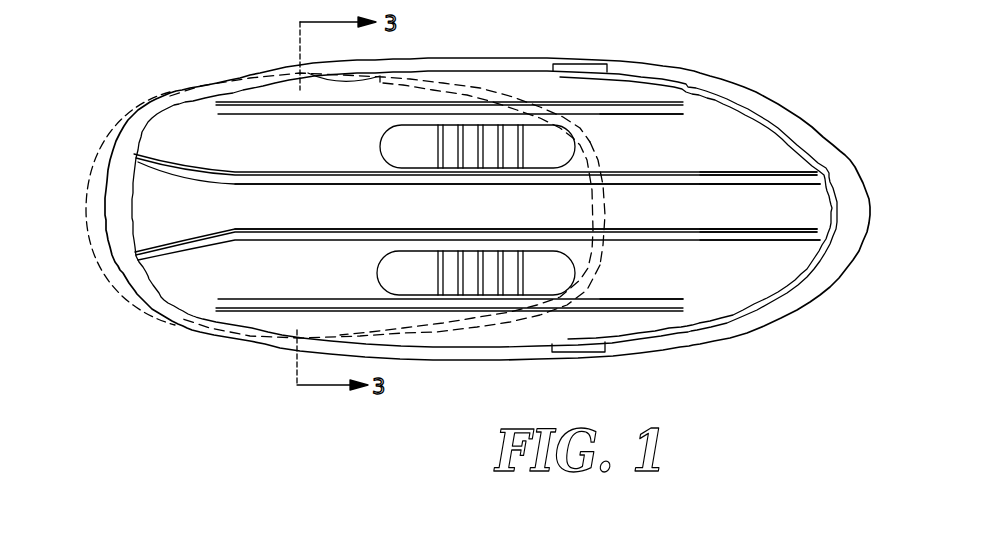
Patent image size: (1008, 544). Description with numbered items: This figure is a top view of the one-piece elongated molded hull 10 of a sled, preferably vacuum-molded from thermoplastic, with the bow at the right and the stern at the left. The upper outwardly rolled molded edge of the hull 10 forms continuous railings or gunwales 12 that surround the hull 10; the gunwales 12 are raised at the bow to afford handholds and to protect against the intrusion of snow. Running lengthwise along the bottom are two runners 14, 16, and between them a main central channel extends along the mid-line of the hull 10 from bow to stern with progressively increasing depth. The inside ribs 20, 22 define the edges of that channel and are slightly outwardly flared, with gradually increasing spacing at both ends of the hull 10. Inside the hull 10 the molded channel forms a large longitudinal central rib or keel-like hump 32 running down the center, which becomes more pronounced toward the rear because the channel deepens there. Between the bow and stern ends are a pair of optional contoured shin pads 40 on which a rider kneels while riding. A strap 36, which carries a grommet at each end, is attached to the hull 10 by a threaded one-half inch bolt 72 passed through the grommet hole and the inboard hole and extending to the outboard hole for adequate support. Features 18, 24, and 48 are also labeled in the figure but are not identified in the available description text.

The hull 10 is at (487, 200).
The gunwales 12 is at (477, 63).
The runner 14 is at (258, 152).
The runner 16 is at (251, 282).
The first inner line 18 is at (657, 117).
The inside rib 20 is at (743, 187).
The inside rib 22 is at (713, 245).
The second inner line 24 is at (613, 302).
The keel-like hump 32 is at (259, 215).
The strap 36 is at (603, 190).
The shin pads 40 is at (381, 141).
The phantom end position 48 is at (90, 182).
The bolt 72 is at (300, 68).